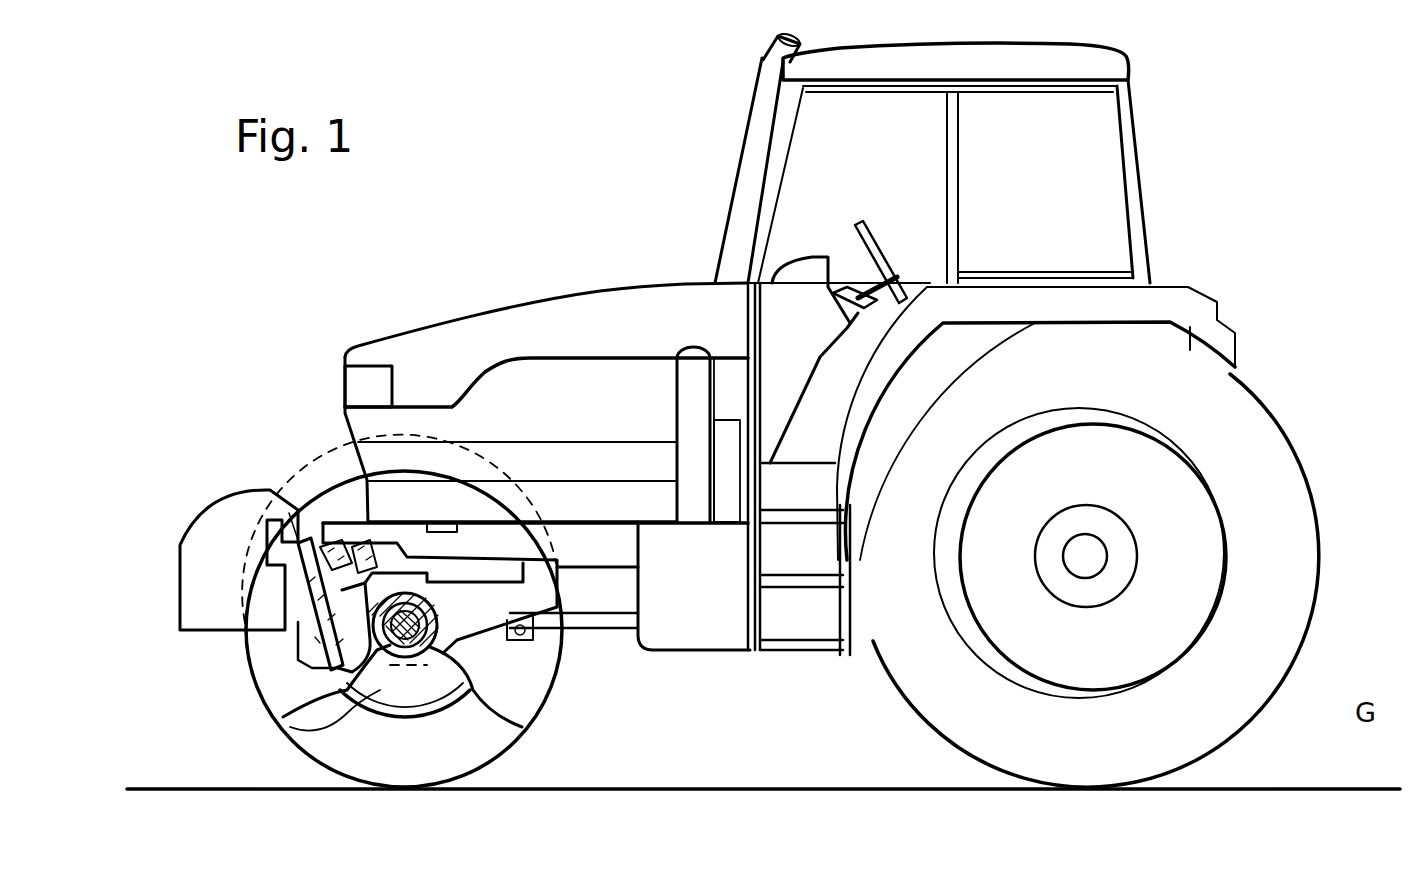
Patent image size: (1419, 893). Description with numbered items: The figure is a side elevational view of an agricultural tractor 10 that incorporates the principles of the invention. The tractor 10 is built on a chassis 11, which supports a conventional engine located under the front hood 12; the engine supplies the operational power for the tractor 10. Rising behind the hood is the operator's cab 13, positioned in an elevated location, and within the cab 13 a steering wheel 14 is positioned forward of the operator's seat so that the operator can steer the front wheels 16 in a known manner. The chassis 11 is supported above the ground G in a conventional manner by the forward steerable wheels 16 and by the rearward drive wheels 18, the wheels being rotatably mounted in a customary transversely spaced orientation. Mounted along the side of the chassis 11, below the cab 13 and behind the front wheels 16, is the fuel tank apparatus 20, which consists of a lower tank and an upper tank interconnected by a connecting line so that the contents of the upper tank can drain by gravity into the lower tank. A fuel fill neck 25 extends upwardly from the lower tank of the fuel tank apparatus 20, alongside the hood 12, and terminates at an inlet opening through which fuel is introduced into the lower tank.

The tractor 10 is at (1278, 161).
The chassis 11 is at (602, 540).
The front hood 12 is at (487, 337).
The operator's cab 13 is at (1124, 113).
The steering wheel 14 is at (872, 232).
The front wheels 16 is at (290, 727).
The rearward drive wheels 18 is at (1318, 578).
The fuel tank apparatus 20 is at (705, 628).
The fuel fill neck 25 is at (683, 395).